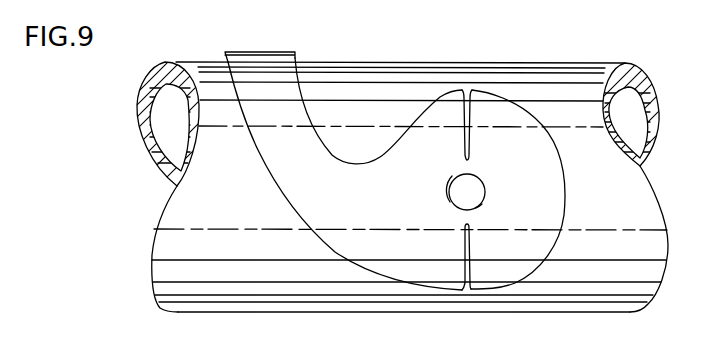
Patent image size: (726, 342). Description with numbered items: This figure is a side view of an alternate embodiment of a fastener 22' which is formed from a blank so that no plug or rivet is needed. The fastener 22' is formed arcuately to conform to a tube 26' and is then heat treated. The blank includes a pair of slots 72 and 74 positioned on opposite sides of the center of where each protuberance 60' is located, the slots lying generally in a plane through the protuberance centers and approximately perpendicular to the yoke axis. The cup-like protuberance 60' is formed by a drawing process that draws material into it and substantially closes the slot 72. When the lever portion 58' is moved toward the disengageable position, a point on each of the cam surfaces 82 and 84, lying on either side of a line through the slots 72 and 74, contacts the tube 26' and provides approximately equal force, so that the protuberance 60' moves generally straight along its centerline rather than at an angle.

The fastener 22' is at (343, 152).
The lever portion 58' is at (266, 46).
The slot 74 is at (472, 82).
The tube 26' is at (400, 174).
The cam surface 82 is at (556, 148).
The protuberance 60' is at (487, 191).
The slot 72 is at (470, 280).
The cam surface 84 is at (323, 236).